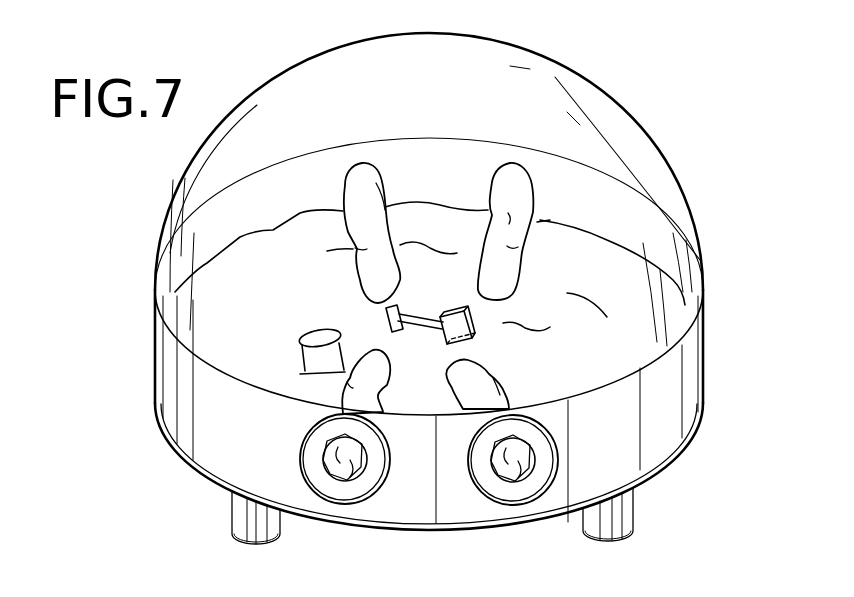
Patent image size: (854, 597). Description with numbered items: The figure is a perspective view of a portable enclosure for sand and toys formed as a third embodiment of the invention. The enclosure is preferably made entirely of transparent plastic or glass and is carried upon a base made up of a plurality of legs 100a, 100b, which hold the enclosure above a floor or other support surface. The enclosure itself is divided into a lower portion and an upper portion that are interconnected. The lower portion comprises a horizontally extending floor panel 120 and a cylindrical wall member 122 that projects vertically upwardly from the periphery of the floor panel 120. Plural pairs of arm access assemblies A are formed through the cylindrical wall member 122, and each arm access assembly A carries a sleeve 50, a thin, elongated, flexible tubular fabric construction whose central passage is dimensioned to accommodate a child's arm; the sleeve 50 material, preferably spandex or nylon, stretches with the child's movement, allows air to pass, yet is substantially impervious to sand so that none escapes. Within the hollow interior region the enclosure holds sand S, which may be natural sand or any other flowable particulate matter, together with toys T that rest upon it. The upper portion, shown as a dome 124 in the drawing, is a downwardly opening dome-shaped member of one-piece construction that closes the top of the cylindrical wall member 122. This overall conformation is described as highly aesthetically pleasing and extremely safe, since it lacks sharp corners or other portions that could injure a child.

The transparent dome cover 124 is at (150, 252).
The cylindrical wall member 122 is at (180, 383).
The floor panel 120 is at (180, 461).
The leg 100a is at (240, 509).
The leg 100b is at (612, 521).
The sleeve 50 is at (383, 184).
The arm access assembly A is at (362, 163).
The sand S is at (296, 242).
The toys T is at (317, 328).